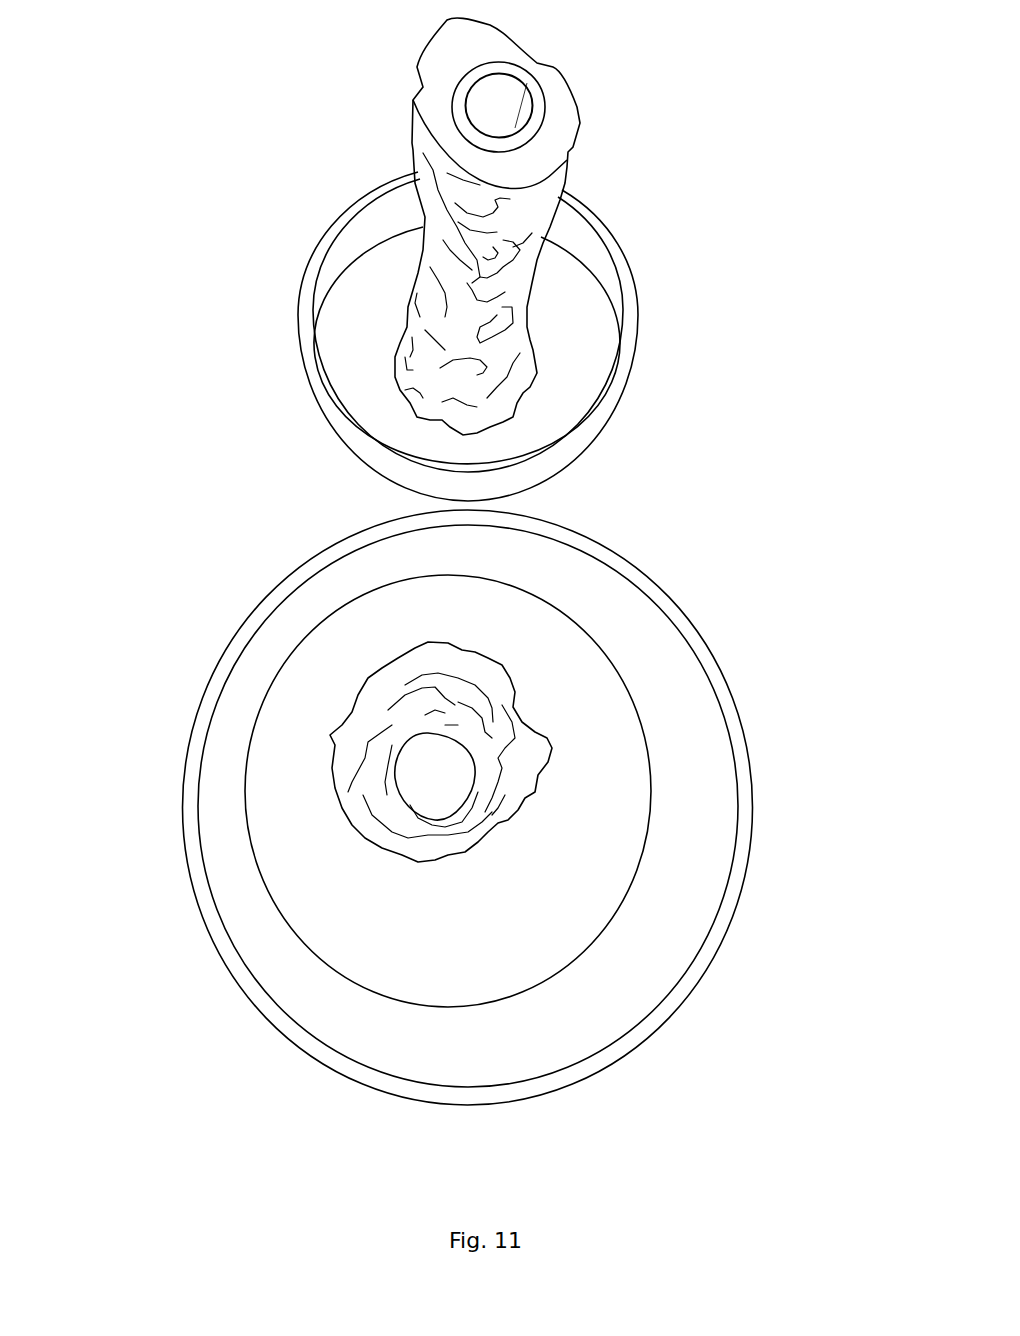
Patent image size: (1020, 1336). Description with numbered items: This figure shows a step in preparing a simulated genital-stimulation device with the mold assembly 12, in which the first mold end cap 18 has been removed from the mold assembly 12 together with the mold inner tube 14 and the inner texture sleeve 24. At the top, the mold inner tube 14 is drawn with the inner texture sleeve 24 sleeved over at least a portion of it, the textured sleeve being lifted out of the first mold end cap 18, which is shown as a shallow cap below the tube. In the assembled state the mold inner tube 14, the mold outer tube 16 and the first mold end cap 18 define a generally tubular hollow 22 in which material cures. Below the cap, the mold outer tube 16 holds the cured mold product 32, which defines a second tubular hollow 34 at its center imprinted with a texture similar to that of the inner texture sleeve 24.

The mold assembly 12 is at (162, 124).
The mold inner tube 14 is at (527, 83).
The mold outer tube 16 is at (752, 803).
The first mold end cap 18 is at (608, 410).
The tubular hollow 22 is at (703, 867).
The inner texture sleeve 24 is at (562, 146).
The cured mold product 32 is at (595, 708).
The second tubular hollow 34 is at (432, 765).